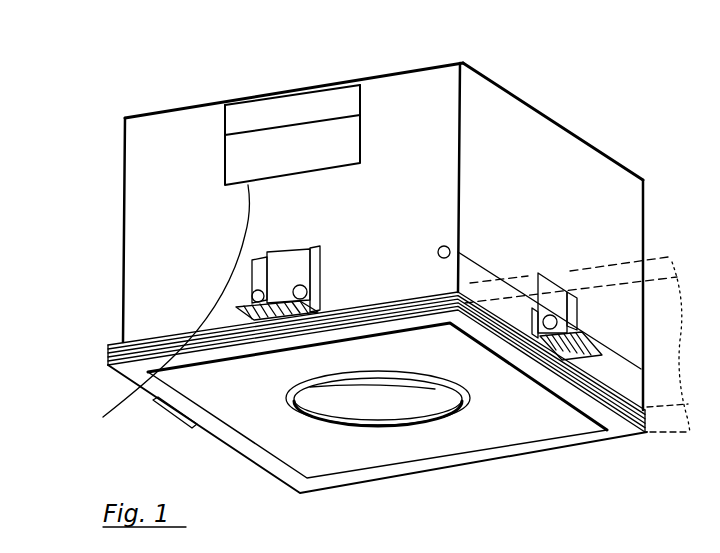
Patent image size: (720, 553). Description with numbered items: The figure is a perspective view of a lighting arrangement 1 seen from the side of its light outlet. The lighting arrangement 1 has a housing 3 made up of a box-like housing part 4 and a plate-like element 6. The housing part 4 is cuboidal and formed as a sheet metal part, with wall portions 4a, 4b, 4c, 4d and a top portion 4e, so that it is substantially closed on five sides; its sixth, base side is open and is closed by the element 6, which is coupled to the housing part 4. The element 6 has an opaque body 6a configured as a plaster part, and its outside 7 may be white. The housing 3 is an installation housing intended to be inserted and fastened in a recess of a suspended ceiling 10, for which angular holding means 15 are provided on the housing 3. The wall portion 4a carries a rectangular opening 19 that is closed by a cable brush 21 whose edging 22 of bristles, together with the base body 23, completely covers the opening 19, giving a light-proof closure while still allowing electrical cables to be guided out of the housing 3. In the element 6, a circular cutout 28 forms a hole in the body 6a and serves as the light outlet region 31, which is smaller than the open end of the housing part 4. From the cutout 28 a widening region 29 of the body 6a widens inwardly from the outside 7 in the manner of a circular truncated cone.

The lighting arrangement 1 is at (86, 357).
The housing 3 is at (140, 350).
The housing part 4 is at (542, 137).
The wall portion 4a is at (147, 231).
The wall portion 4b is at (596, 196).
The wall portion 4c is at (647, 278).
The wall portion 4d is at (117, 166).
The top portion 4e is at (444, 60).
The plate-like element 6 is at (377, 428).
The body 6a is at (503, 437).
The outside 7 is at (552, 436).
The suspended ceiling 10 is at (678, 430).
The holding means 15 is at (332, 270).
The opening 19 is at (162, 317).
The cable brush 21 is at (368, 130).
The edging 22 is at (305, 137).
The base body 23 is at (243, 112).
The cutout 28 is at (350, 422).
The widening region 29 is at (320, 403).
The light outlet region 31 is at (416, 422).